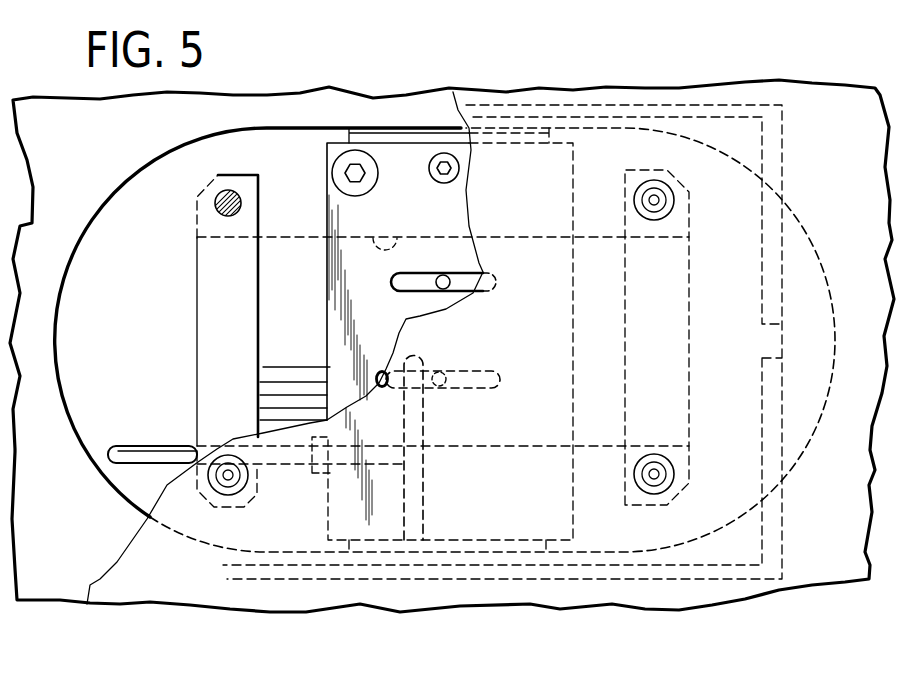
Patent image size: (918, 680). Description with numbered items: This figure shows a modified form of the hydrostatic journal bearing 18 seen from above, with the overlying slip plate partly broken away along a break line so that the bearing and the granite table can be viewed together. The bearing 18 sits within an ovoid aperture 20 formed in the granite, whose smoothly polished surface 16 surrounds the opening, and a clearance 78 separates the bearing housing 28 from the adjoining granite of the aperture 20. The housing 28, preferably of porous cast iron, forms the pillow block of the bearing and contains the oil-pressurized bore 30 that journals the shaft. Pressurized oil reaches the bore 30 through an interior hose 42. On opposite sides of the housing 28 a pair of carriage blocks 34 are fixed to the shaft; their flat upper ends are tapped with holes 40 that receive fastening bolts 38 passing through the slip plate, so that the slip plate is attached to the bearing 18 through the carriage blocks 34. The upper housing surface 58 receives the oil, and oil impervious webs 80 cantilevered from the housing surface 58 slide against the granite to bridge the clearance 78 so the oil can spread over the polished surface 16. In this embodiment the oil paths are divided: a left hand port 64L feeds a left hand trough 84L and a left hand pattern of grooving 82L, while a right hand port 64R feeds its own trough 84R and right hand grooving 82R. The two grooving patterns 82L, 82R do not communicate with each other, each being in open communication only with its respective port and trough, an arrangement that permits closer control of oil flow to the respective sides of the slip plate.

The polished surface 16 is at (826, 530).
The hydrostatic journal bearing 18 is at (291, 140).
The ovoid aperture 20 is at (138, 297).
The housing 28 is at (340, 272).
The bore 30 is at (401, 237).
The carriage blocks 34 is at (203, 314).
The fastening bolts 38 is at (218, 212).
The tapped holes 40 is at (223, 194).
The interior hose 42 is at (158, 446).
The housing surface 58 is at (377, 298).
The left hand port 64L is at (477, 273).
The right hand port 64R is at (457, 367).
The clearance 78 is at (566, 128).
The webs 80 is at (479, 130).
The left hand grooving 82L is at (509, 100).
The right hand grooving 82R is at (498, 580).
The left hand trough 84L is at (403, 272).
The right hand trough 84R is at (383, 372).